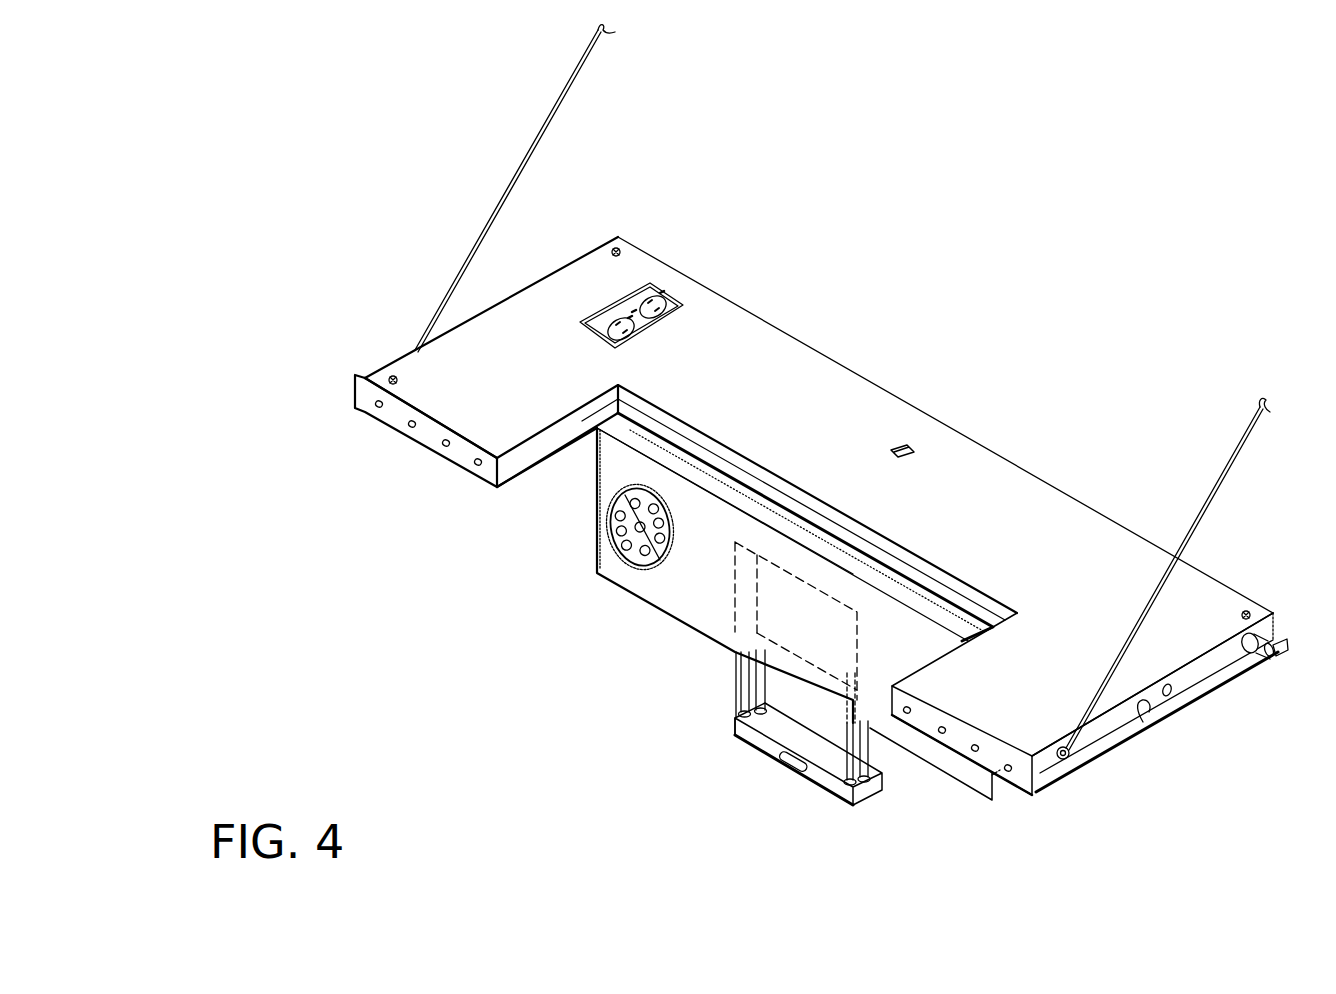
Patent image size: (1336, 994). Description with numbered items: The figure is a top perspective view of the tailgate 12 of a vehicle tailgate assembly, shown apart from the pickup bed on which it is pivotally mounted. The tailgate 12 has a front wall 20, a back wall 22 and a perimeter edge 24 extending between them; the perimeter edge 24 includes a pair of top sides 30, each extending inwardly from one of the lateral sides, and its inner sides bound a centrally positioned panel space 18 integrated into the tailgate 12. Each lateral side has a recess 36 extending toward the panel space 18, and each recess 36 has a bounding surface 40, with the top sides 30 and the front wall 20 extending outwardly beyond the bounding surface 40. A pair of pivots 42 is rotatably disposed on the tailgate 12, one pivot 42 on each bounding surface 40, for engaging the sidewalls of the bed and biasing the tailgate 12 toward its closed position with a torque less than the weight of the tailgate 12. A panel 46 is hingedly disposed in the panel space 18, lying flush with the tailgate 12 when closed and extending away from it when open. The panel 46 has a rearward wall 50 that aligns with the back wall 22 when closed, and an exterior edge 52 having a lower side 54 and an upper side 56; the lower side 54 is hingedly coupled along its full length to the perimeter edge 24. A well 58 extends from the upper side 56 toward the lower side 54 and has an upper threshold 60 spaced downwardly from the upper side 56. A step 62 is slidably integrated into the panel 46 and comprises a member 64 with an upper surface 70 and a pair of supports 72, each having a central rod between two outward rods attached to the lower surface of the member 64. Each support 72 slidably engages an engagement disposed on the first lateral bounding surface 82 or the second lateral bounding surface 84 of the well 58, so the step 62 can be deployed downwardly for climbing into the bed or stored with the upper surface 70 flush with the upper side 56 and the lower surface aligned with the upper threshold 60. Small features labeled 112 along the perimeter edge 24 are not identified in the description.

The tailgate 12 is at (370, 335).
The back wall 22 is at (697, 292).
The perimeter edge 24 is at (447, 455).
The mounting holes 112 is at (358, 412).
The top sides 30 is at (405, 425).
The panel space 18 is at (548, 497).
The lower side 54 is at (800, 533).
The panel 46 is at (680, 602).
The rearward wall 50 is at (632, 585).
The exterior edge 52 is at (705, 637).
The first lateral bounding surface 82 is at (755, 585).
The second lateral bounding surface 84 is at (852, 625).
The well 58 is at (832, 650).
The upper threshold 60 is at (790, 668).
The upper surface 70 is at (790, 772).
The member 64 is at (735, 735).
The step 62 is at (853, 812).
The supports 72 is at (857, 690).
The front wall 20 is at (1088, 763).
The upper side 56 is at (922, 758).
The recess 36 is at (1198, 692).
The bounding surface 40 is at (1143, 722).
The pivots 42 is at (1270, 654).